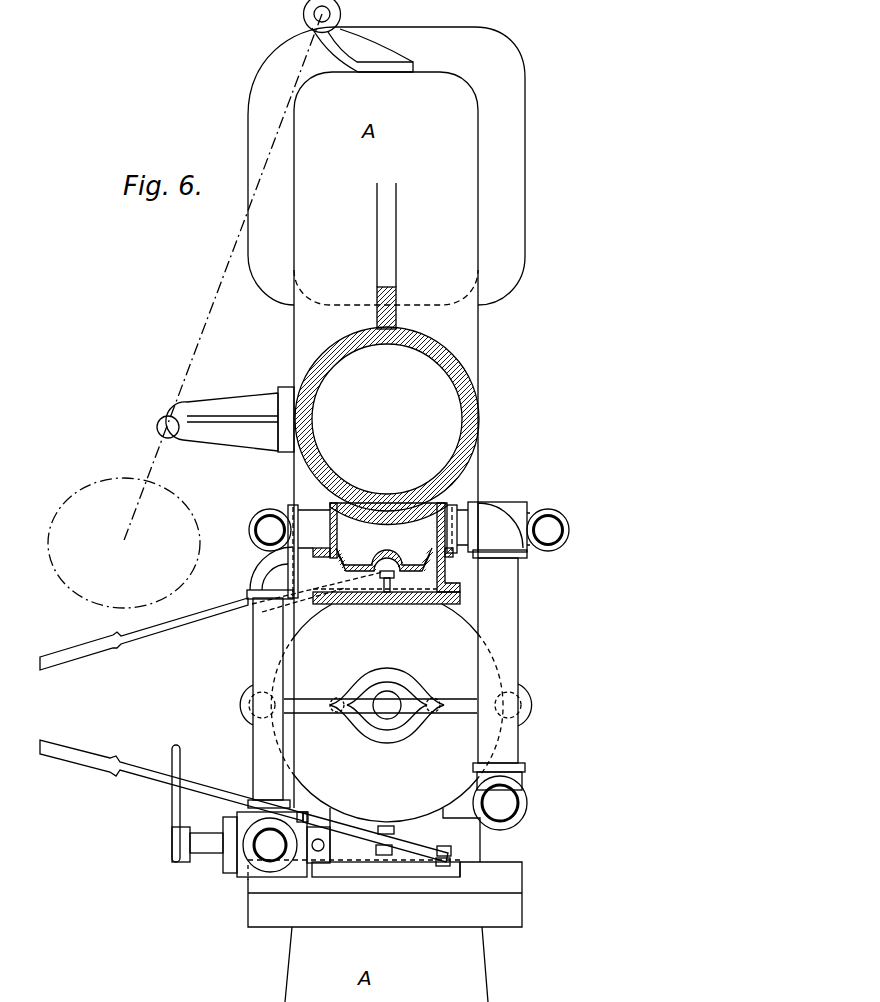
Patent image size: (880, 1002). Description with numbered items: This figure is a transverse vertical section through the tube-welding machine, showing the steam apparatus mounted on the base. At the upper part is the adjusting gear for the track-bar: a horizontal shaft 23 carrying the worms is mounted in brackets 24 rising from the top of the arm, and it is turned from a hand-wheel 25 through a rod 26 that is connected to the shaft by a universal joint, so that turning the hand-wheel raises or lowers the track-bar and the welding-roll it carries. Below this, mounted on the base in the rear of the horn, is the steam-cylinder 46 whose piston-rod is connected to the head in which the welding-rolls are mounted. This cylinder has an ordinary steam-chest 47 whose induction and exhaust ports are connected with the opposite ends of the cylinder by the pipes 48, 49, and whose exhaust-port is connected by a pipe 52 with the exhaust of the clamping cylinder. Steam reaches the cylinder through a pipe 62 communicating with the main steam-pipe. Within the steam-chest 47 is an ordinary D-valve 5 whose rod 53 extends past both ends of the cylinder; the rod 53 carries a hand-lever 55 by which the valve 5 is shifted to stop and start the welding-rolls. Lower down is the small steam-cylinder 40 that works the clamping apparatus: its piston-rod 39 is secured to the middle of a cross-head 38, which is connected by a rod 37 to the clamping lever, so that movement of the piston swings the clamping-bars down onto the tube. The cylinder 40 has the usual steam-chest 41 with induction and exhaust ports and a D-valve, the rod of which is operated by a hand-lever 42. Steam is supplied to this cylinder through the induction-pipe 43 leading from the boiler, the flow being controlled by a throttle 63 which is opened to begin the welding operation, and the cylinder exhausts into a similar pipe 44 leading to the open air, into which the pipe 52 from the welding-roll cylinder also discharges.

The horizontal shaft 23 is at (341, 14).
The brackets 24 is at (362, 50).
The hand-wheel 25 is at (120, 479).
The rod 26 is at (222, 278).
The steam-cylinder 46 is at (387, 419).
The steam-chest 47 is at (378, 553).
The D-valve 5 is at (356, 566).
The valve rod 53 is at (396, 575).
The pipe 49 is at (270, 554).
The pipe 48 is at (518, 530).
The hand-lever 55 is at (202, 618).
The steam supply pipe 62 is at (269, 703).
The exhaust pipe 52 is at (498, 660).
The steam-cylinder 40 is at (387, 713).
The rod 37 is at (542, 708).
The cross-head 38 is at (380, 706).
The piston-rod 39 is at (387, 705).
The hand-lever 42 is at (86, 768).
The steam-chest 41 is at (374, 839).
The induction-pipe 43 is at (272, 846).
The exhaust pipe 44 is at (487, 796).
The throttle 63 is at (204, 809).